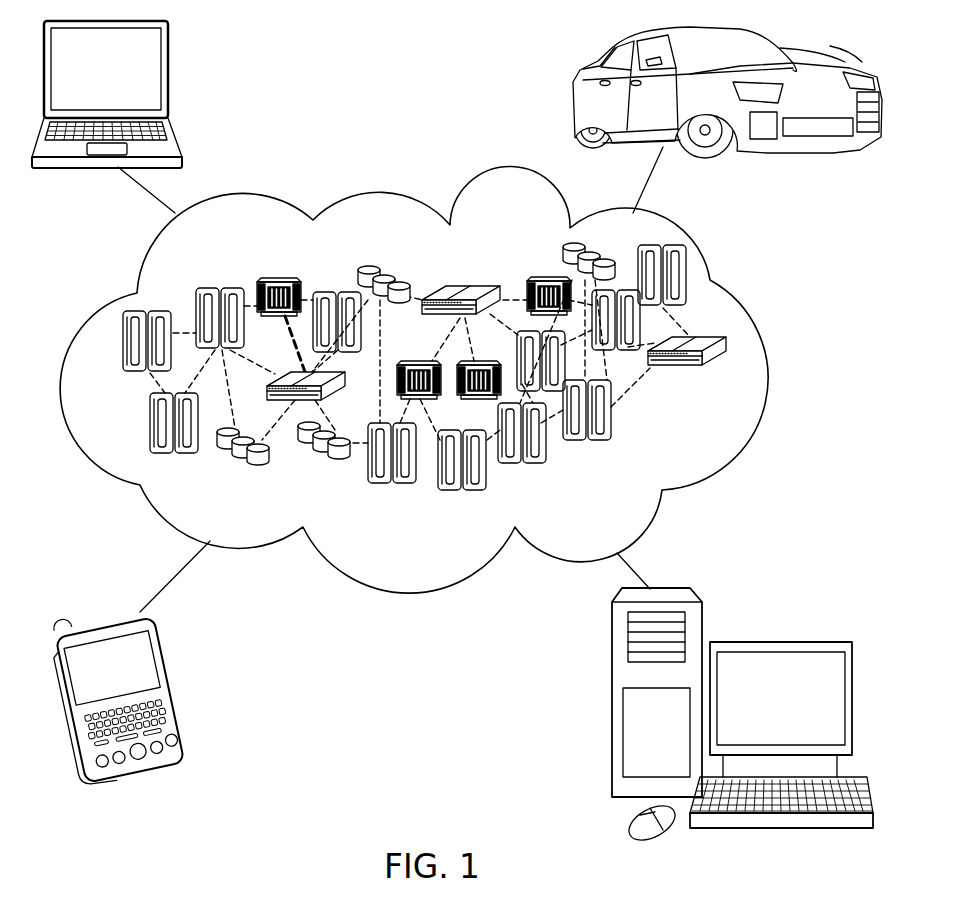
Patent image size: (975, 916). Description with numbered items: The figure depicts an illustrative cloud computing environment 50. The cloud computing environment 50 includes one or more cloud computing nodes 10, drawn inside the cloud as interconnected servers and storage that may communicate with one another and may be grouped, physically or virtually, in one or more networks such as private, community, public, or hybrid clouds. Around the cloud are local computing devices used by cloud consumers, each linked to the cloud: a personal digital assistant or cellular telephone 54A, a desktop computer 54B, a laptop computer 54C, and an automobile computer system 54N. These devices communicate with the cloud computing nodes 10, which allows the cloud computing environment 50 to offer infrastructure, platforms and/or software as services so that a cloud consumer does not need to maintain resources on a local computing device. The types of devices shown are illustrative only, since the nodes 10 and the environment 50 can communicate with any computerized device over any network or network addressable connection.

The cloud computing node 10 is at (724, 432).
The cloud computing environment 50 is at (760, 312).
The personal digital assistant or cellular telephone 54A is at (175, 693).
The desktop computer 54B is at (775, 641).
The laptop computer 54C is at (170, 73).
The automobile computer system 54N is at (573, 90).